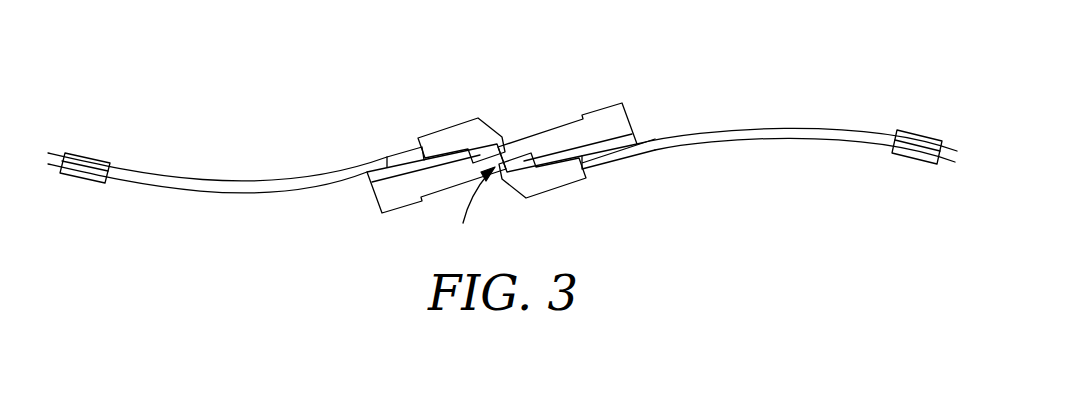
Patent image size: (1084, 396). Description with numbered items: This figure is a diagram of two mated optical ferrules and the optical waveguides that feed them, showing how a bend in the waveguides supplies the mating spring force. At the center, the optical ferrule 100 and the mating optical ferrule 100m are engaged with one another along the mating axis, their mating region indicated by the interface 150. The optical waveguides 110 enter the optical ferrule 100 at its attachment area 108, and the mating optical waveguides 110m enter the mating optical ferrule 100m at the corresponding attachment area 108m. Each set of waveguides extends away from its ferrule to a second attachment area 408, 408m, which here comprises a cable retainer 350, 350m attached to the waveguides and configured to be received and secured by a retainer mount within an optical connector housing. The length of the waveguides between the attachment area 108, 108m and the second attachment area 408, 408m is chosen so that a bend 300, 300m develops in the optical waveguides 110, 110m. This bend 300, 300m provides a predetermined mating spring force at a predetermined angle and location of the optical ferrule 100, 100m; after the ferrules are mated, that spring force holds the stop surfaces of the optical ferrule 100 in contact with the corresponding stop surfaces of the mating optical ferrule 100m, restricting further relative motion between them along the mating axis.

The optical ferrule 100 is at (460, 135).
The mating optical ferrule 100m is at (550, 185).
The attachment area 108 is at (387, 156).
The attachment area of the mating optical ferrule 108m is at (604, 168).
The optical waveguides 110 is at (193, 178).
The optical waveguides of the mating optical ferrule 110m is at (752, 143).
The connector interface 150 is at (468, 209).
The bend 300 is at (230, 187).
The bend in the mating optical waveguides 300m is at (832, 132).
The cable retainer 350 is at (93, 155).
The cable retainer of the mating optical waveguides 350m is at (908, 159).
The second attachment area 408 is at (90, 180).
The second attachment area of the mating optical waveguides 408m is at (922, 141).